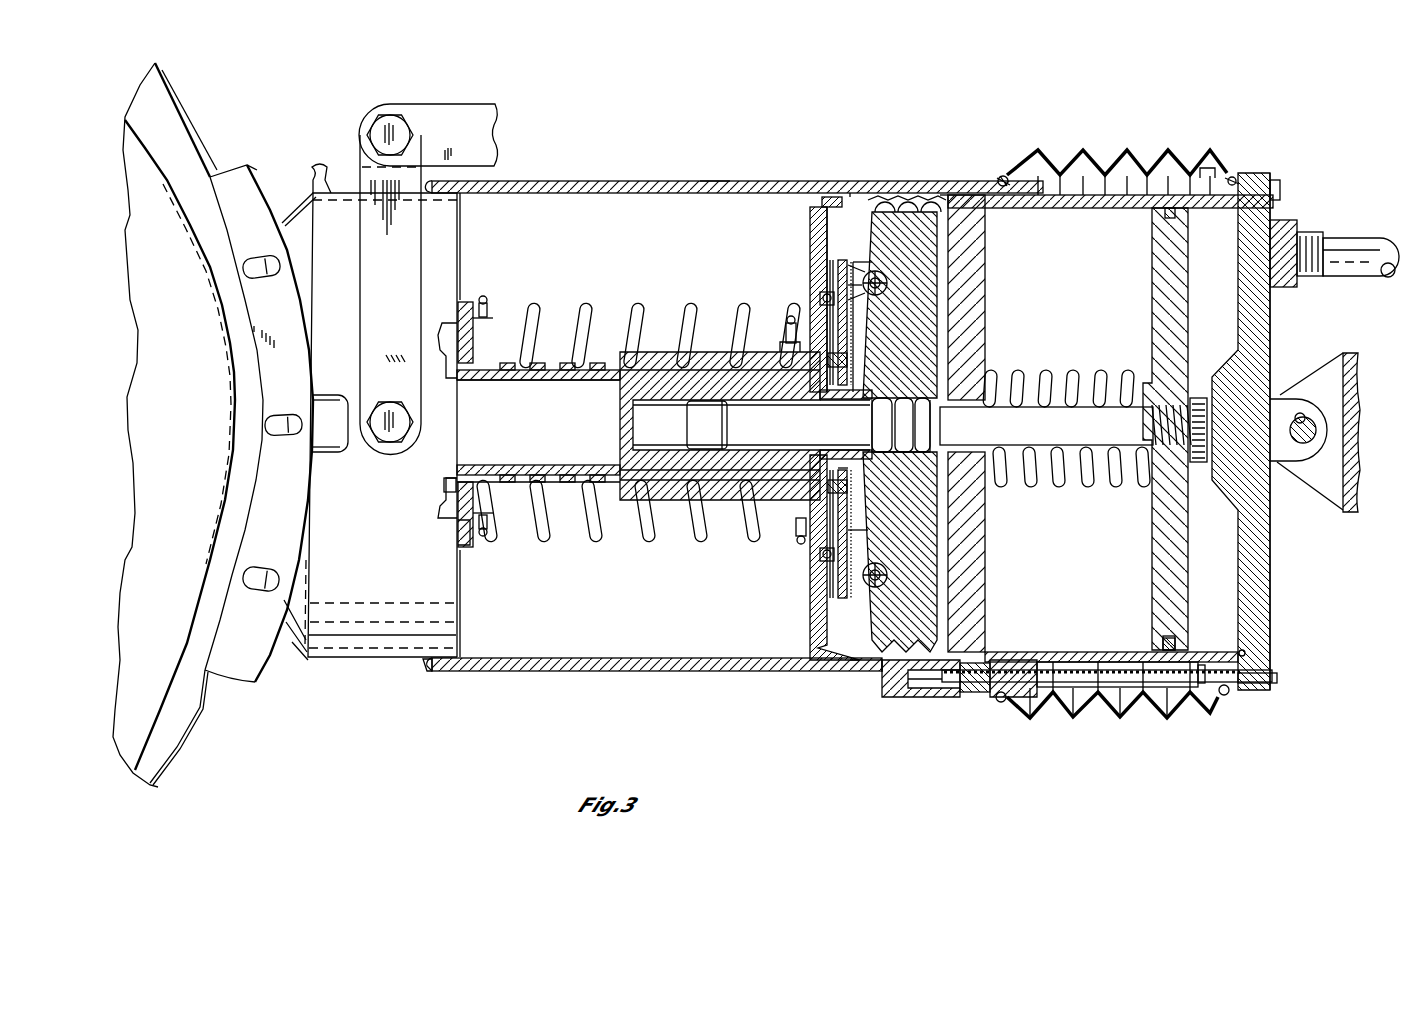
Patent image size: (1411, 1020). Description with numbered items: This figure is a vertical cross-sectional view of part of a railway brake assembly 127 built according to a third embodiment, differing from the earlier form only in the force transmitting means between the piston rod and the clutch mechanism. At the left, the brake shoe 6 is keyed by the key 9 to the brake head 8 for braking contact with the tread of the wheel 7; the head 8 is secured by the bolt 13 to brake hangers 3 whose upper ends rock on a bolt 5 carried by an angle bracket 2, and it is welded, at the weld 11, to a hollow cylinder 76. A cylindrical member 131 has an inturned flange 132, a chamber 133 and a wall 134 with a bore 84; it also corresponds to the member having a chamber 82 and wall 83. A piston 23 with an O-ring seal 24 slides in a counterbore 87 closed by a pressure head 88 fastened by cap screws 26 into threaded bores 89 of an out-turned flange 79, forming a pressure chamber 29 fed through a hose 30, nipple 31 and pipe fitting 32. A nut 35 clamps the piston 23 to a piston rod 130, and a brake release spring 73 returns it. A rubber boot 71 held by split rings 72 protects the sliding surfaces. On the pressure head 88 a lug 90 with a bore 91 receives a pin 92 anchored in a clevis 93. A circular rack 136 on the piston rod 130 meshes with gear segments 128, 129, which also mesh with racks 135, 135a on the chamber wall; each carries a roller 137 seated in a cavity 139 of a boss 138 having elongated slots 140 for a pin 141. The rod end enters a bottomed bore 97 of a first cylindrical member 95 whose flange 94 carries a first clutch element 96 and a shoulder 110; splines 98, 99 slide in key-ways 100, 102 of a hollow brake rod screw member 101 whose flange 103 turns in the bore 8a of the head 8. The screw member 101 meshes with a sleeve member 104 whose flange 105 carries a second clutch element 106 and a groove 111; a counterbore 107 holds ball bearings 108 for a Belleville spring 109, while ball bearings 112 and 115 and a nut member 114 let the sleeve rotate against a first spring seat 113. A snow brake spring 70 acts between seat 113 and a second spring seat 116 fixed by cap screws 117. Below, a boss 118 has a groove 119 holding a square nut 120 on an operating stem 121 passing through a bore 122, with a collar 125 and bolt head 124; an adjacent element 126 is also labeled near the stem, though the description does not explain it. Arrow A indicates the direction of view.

The angle bracket 2 is at (455, 112).
The brake hangers 3 is at (372, 180).
The bolt 5 is at (378, 130).
The brake shoe 6 is at (243, 661).
The wheel 7 is at (170, 702).
The brake head 8 is at (368, 640).
The bottomed bore 8a is at (445, 360).
The key 9 is at (312, 170).
The welding 11 is at (430, 667).
The bolt 13 is at (386, 445).
The piston 23 is at (1175, 575).
The O-ring seal 24 is at (1175, 640).
The cap screws 26 is at (1281, 190).
The pressure chamber 29 is at (1222, 547).
The hose 30 is at (1375, 240).
The nipple 31 is at (1330, 262).
The pipe fitting 32 is at (1290, 276).
The nut 35 is at (1200, 396).
The snow brake spring 70 is at (605, 542).
The rubber boot 71 is at (1083, 152).
The split metallic ring 72 is at (1003, 176).
The brake release spring 73 is at (1060, 484).
The hollow cylinder 76 is at (658, 190).
The out-turned flange 79 is at (1206, 167).
The chamber 82 is at (1140, 690).
The wall 83 is at (980, 597).
The bore 84 is at (980, 432).
The counterbore 87 is at (1200, 690).
The pressure head 88 is at (1262, 625).
The screw-threaded bores 89 is at (1208, 208).
The lug 90 is at (1292, 460).
The bore 91 is at (1298, 414).
The pin 92 is at (1316, 432).
The clevis 93 is at (1332, 380).
The first out-turned flange 94 is at (860, 305).
The first cylindrical member 95 is at (632, 425).
The first annular clutch element 96 is at (880, 252).
The bottomed bore 97 is at (853, 408).
The spline 98 is at (626, 388).
The spline 99 is at (632, 462).
The key-way 100 is at (540, 384).
The hollow brake rod screw member 101 is at (540, 480).
The second key-way 102 is at (540, 464).
The second out-turned flange 103 is at (450, 487).
The sleeve member 104 is at (680, 354).
The third out-turned flange 105 is at (829, 274).
The second annular clutch element 106 is at (835, 580).
The counterbore 107 is at (848, 365).
The first set of ball bearings 108 is at (800, 532).
The Belleville spring 109 is at (848, 486).
The shoulder 110 is at (848, 470).
The annular groove 111 is at (860, 530).
The second set of ball bearings 112 is at (820, 298).
The first annular spring seat 113 is at (820, 202).
The nut member 114 is at (746, 352).
The third set of ball bearings 115 is at (788, 332).
The second annular spring seat 116 is at (460, 537).
The cap screws 117 is at (485, 318).
The boss 118 is at (996, 697).
The groove 119 is at (905, 678).
The square nut 120 is at (963, 686).
The operating stem 121 is at (1103, 672).
The bore 122 is at (1037, 675).
The bolt head 124 is at (1278, 675).
The collar 125 is at (1224, 695).
The retainer 126 is at (1017, 668).
The brake assembly 127 is at (697, 170).
The gear segment 128 is at (927, 337).
The gear segment 129 is at (915, 560).
The piston rod 130 is at (1090, 412).
The cylindrical member 131 is at (1100, 208).
The inturned flange 132 is at (850, 195).
The chamber 133 is at (942, 212).
The wall 134 is at (978, 302).
The rack 135 is at (920, 196).
The rack 135a is at (852, 668).
The circular rack 136 is at (931, 420).
The roller 137 is at (879, 275).
The boss 138 is at (862, 256).
The cavity 139 is at (880, 295).
The elongated slots 140 is at (882, 277).
The pin 141 is at (887, 284).
The direction A is at (848, 251).